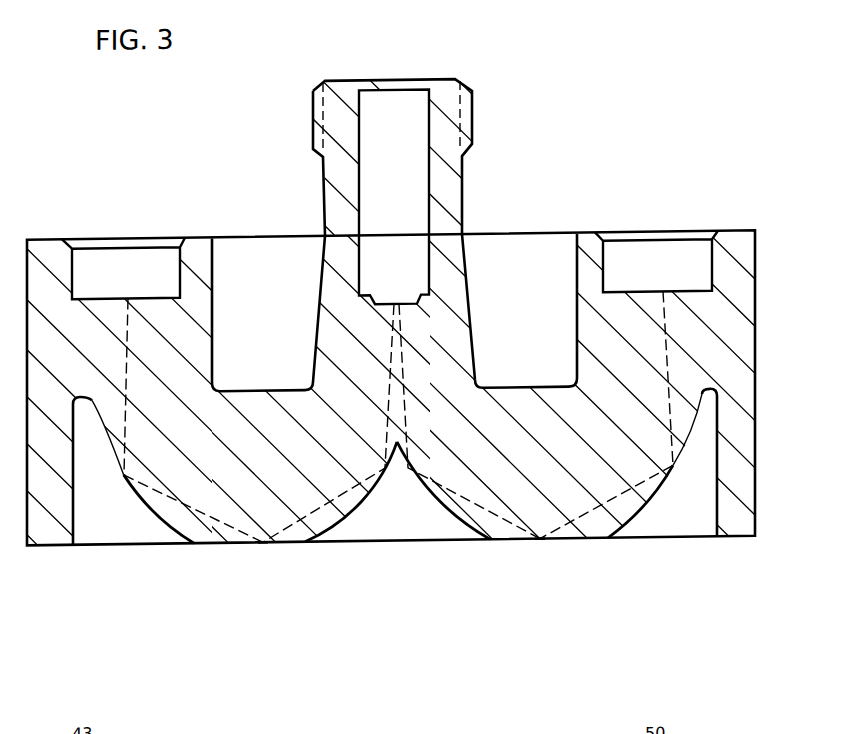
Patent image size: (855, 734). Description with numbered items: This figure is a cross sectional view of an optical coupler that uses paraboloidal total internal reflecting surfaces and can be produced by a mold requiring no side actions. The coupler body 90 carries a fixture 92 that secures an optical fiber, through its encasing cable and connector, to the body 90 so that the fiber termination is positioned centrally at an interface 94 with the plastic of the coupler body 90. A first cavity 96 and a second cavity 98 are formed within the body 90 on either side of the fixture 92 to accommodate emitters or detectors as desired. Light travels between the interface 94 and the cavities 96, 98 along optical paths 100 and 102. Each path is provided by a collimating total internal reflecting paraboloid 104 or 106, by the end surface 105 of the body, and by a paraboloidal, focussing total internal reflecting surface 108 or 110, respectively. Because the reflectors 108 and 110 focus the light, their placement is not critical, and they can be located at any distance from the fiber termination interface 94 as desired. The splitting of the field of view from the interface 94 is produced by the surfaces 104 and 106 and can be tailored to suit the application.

The coupler body 90 is at (742, 337).
The fixture 92 is at (450, 200).
The interface 94 is at (383, 294).
The first cavity 96 is at (130, 262).
The second cavity 98 is at (659, 262).
The optical path 100 is at (385, 427).
The optical path 102 is at (408, 430).
The collimating total internal reflecting paraboloid 104 is at (354, 512).
The end surface 105 is at (274, 542).
The collimating total internal reflecting paraboloid 106 is at (428, 487).
The paraboloidal focussing total internal reflecting surface 108 is at (147, 505).
The paraboloidal focussing total internal reflecting surface 110 is at (643, 511).